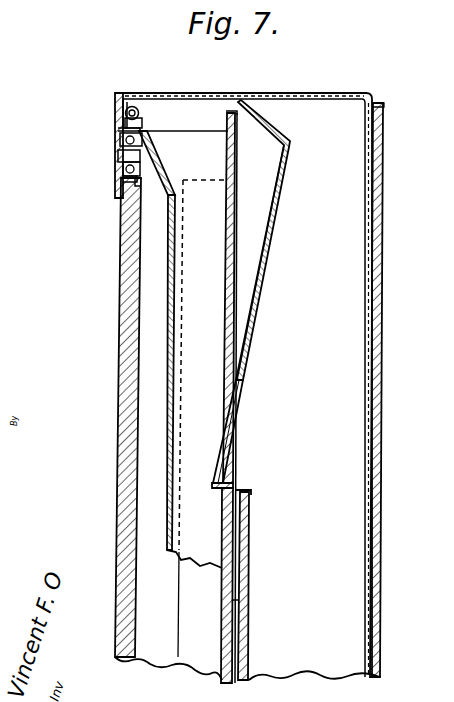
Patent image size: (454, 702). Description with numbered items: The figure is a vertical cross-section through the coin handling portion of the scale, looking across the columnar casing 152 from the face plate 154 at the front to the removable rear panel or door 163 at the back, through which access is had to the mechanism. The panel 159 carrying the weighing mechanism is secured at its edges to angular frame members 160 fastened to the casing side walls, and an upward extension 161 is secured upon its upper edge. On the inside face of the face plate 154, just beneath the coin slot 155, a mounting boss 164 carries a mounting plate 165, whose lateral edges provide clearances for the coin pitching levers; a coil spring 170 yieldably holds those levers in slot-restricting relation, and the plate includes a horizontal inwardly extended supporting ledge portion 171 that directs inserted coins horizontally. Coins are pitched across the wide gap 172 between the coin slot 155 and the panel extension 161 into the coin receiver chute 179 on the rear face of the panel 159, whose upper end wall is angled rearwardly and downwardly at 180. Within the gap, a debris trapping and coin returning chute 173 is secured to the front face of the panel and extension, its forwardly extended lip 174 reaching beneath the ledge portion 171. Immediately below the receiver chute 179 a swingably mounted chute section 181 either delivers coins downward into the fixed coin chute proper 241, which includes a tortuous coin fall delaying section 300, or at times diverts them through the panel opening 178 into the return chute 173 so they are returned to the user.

The columnar casing 152 is at (342, 77).
The face plate 154 is at (118, 147).
The coin slot 155 is at (116, 124).
The panel 159 is at (238, 311).
The angular frame members 160 is at (208, 641).
The upward extension 161 is at (237, 263).
The removable rear panel or door 163 is at (383, 245).
The mounting boss 164 is at (118, 157).
The mounting plate 165 is at (118, 167).
The coil spring 170 is at (134, 101).
The supporting ledge portion 171 is at (143, 129).
The gap 172 is at (219, 122).
The debris trapping and coin returning chute 173 is at (166, 297).
The forwardly extended lip 174 is at (122, 179).
The opening 178 is at (233, 486).
The coin receiver chute 179 is at (260, 212).
The angled upper end wall 180 is at (272, 131).
The swingably mounted chute section 181 is at (230, 448).
The coin chute proper 241 is at (252, 556).
The coin fall delaying section 300 is at (240, 624).